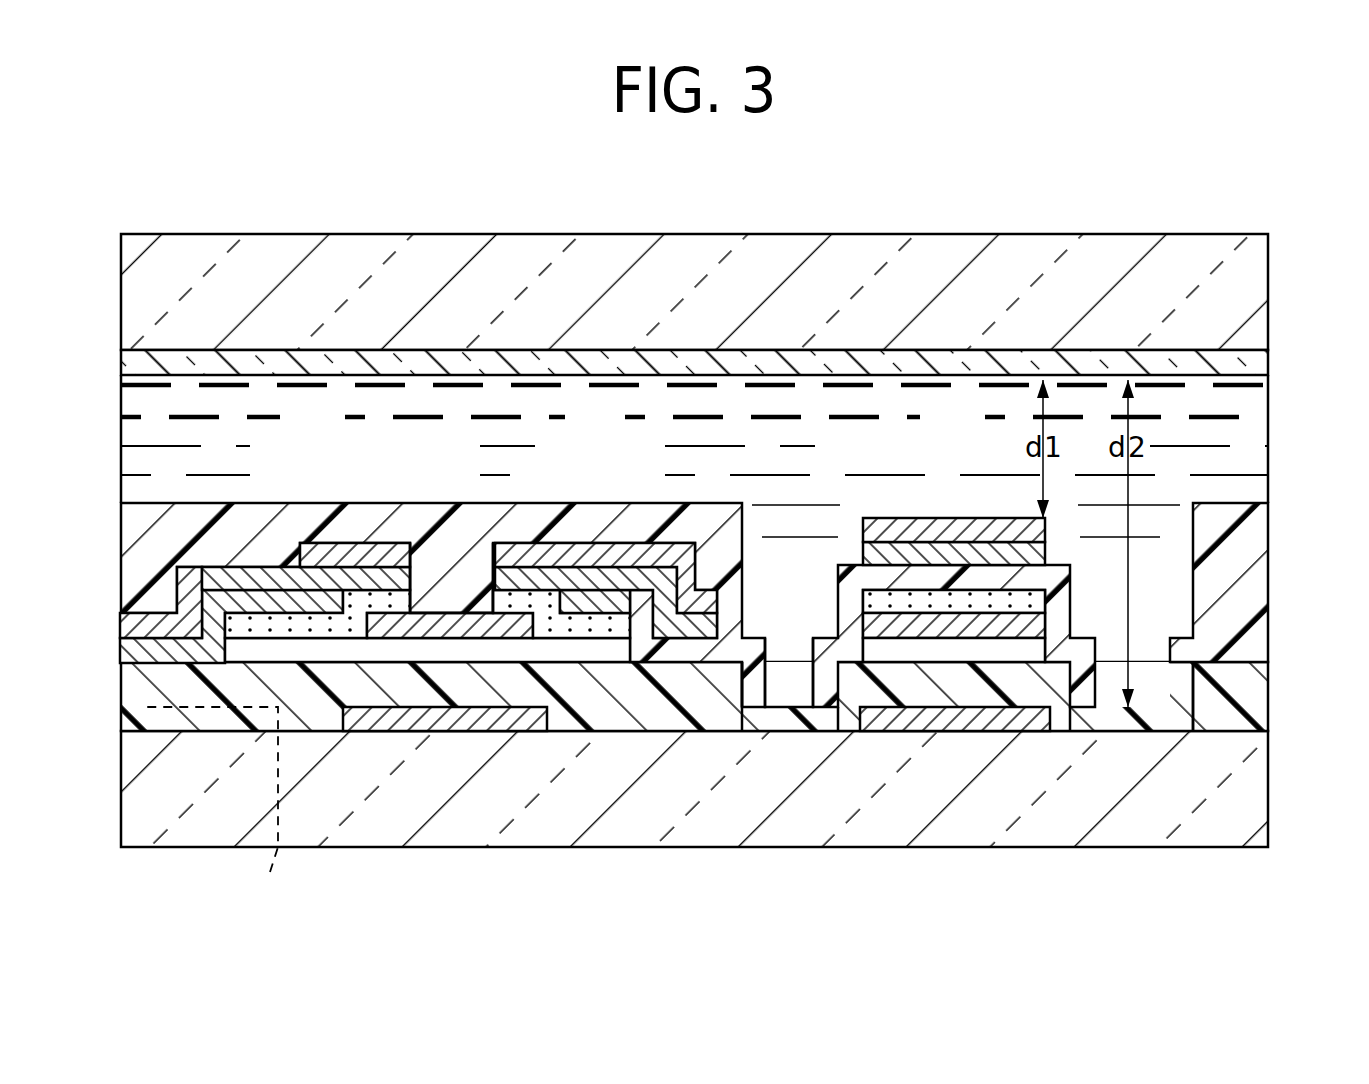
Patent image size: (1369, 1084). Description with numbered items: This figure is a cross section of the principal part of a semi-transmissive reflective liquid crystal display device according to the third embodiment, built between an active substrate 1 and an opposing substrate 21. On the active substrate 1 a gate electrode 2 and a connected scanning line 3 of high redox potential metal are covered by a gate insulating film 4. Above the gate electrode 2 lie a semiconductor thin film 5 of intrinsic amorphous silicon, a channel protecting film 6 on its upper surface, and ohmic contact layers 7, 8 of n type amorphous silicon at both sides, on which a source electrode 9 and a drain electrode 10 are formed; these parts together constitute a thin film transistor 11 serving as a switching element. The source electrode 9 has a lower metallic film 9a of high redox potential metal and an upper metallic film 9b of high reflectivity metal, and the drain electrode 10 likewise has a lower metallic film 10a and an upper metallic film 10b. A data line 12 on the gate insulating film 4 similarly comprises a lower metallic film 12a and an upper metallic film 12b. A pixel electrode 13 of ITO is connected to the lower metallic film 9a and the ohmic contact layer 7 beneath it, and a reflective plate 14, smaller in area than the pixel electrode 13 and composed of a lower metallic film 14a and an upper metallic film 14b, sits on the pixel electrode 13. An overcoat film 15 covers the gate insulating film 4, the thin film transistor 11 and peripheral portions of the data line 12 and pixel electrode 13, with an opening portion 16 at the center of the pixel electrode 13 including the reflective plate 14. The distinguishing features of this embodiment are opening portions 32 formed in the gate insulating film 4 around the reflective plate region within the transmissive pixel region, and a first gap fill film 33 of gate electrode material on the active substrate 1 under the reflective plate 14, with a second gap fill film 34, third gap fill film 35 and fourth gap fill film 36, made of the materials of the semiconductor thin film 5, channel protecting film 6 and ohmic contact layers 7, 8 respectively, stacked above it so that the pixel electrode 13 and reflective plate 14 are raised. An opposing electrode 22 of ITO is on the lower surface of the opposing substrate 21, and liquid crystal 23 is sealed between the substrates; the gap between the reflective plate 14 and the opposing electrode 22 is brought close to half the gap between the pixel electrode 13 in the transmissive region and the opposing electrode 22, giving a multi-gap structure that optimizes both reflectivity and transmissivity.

The active substrate 1 is at (1256, 800).
The gate electrode 2 is at (443, 725).
The scanning line 3 is at (210, 810).
The gate insulating film 4 is at (1256, 697).
The semiconductor thin film 5 is at (568, 655).
The channel protecting film 6 is at (490, 630).
The ohmic contact layer 7 is at (615, 630).
The ohmic contact layer 8 is at (330, 637).
The source electrode 9 is at (606, 508).
The lower metallic film 9a is at (565, 580).
The upper metallic film 9b is at (537, 440).
The drain electrode 10 is at (306, 484).
The lower metallic film 10a is at (283, 582).
The upper metallic film 10b is at (355, 501).
The thin film transistor 11 is at (461, 545).
The data line 12 is at (222, 769).
The lower metallic film 12a is at (143, 657).
The upper metallic film 12b is at (187, 628).
The pixel electrode 13 is at (800, 727).
The reflective plate 14 is at (954, 471).
The lower metallic film 14a is at (913, 553).
The upper metallic film 14b is at (887, 440).
The overcoat film 15 is at (133, 530).
The opening portion 16 is at (742, 540).
The opposing substrate 21 is at (1256, 292).
The opposing electrode 22 is at (837, 366).
The liquid crystal 23 is at (1256, 437).
The opening portion 32 is at (732, 697).
The first gap fill film 33 is at (885, 725).
The second gap fill film 34 is at (937, 652).
The third gap fill film 35 is at (993, 632).
The fourth gap fill film 36 is at (1030, 600).